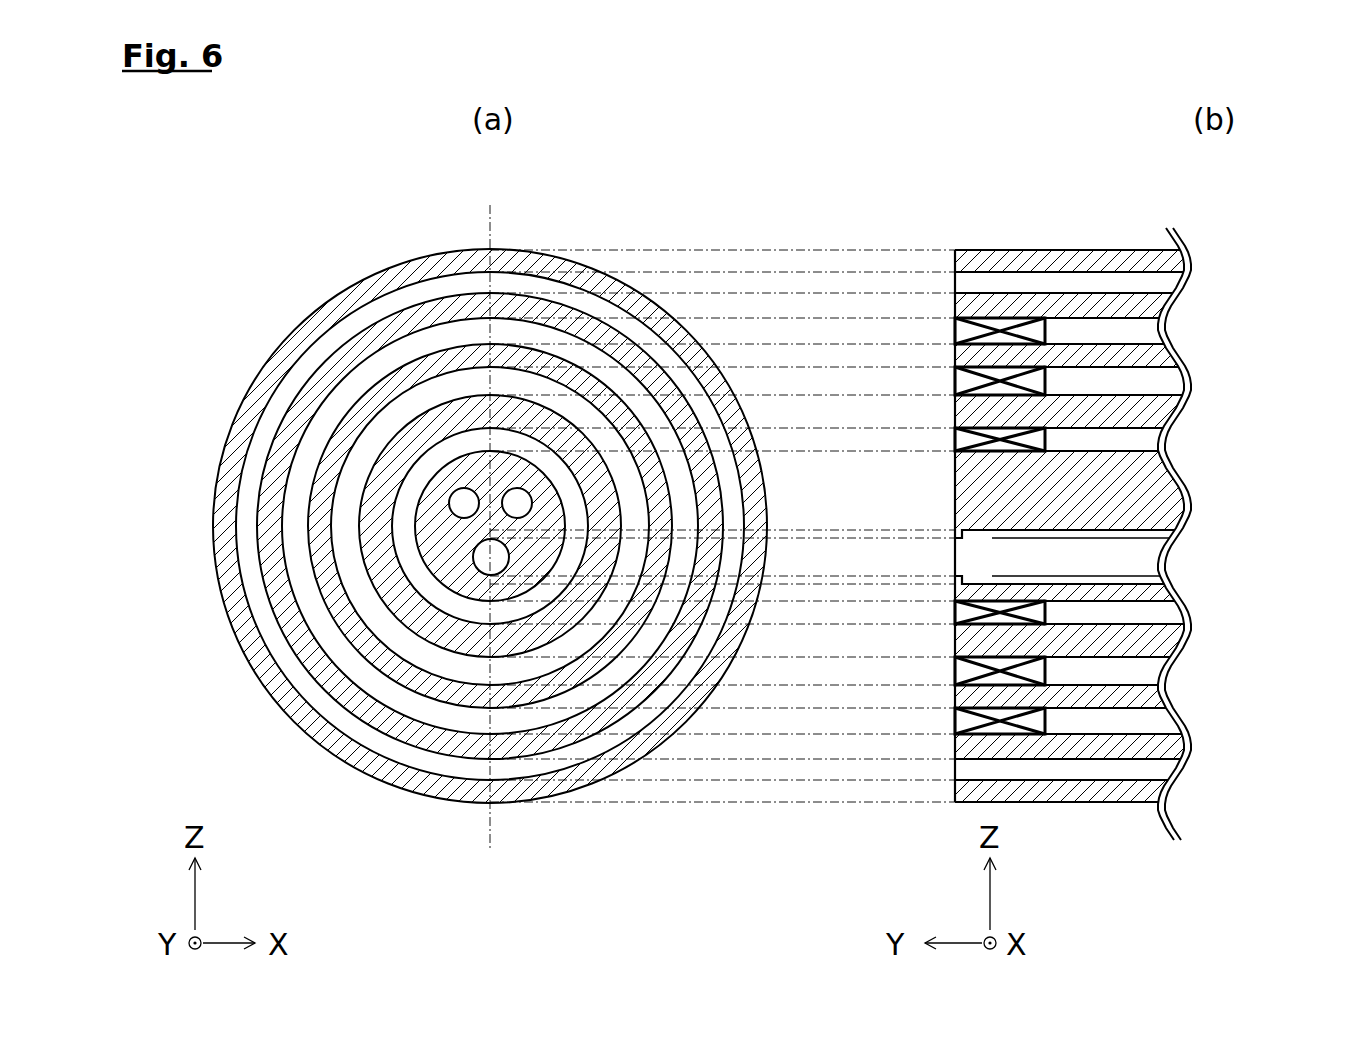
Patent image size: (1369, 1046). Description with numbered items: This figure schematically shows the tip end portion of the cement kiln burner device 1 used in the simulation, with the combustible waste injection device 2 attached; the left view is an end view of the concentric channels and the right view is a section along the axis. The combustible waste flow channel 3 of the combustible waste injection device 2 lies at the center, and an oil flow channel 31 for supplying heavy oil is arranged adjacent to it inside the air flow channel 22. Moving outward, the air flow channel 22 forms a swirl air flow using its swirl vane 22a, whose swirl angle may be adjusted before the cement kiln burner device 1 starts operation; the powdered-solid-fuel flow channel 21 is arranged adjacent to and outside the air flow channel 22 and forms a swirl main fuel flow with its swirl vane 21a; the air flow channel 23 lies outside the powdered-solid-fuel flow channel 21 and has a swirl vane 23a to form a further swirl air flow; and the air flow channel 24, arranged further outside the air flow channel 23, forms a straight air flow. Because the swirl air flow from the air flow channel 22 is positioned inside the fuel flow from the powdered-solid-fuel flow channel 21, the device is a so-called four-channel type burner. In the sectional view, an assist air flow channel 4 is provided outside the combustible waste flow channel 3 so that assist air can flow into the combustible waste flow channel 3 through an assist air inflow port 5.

The cement kiln burner device 1 is at (233, 190).
The combustible waste injection device 2 is at (476, 569).
The combustible waste flow channel 3 is at (1148, 562).
The assist air flow channel 4 is at (1160, 535).
The assist air inflow port 5 is at (968, 543).
The powdered-solid-fuel flow channel 21 is at (350, 476).
The swirl vane of powdered-solid-fuel flow channel 21a is at (953, 381).
The air flow channel 22 is at (405, 552).
The swirl vane 22a is at (953, 438).
The air flow channel 23 is at (330, 413).
The swirl vane 23a is at (953, 332).
The air flow channel 24 is at (362, 322).
The oil flow channel 31 is at (460, 500).